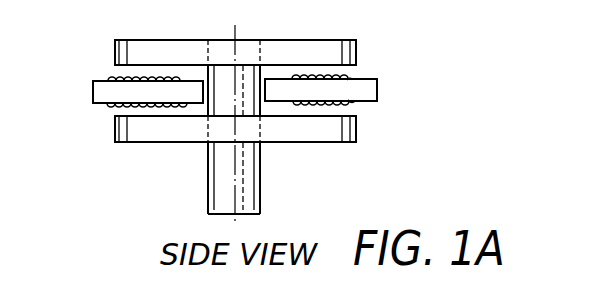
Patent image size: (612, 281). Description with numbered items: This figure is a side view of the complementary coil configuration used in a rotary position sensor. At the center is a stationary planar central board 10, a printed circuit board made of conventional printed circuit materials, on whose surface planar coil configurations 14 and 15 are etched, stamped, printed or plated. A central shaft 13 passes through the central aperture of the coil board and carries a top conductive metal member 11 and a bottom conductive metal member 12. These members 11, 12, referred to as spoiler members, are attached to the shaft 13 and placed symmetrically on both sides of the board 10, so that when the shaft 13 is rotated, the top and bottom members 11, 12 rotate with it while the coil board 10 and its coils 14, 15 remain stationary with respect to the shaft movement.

The central board 10 is at (348, 75).
The top conductive metal member 11 is at (357, 45).
The bottom conductive metal member 12 is at (352, 132).
The central shaft 13 is at (254, 180).
The planar coil configuration 14 is at (355, 75).
The planar coil configuration 15 is at (112, 81).